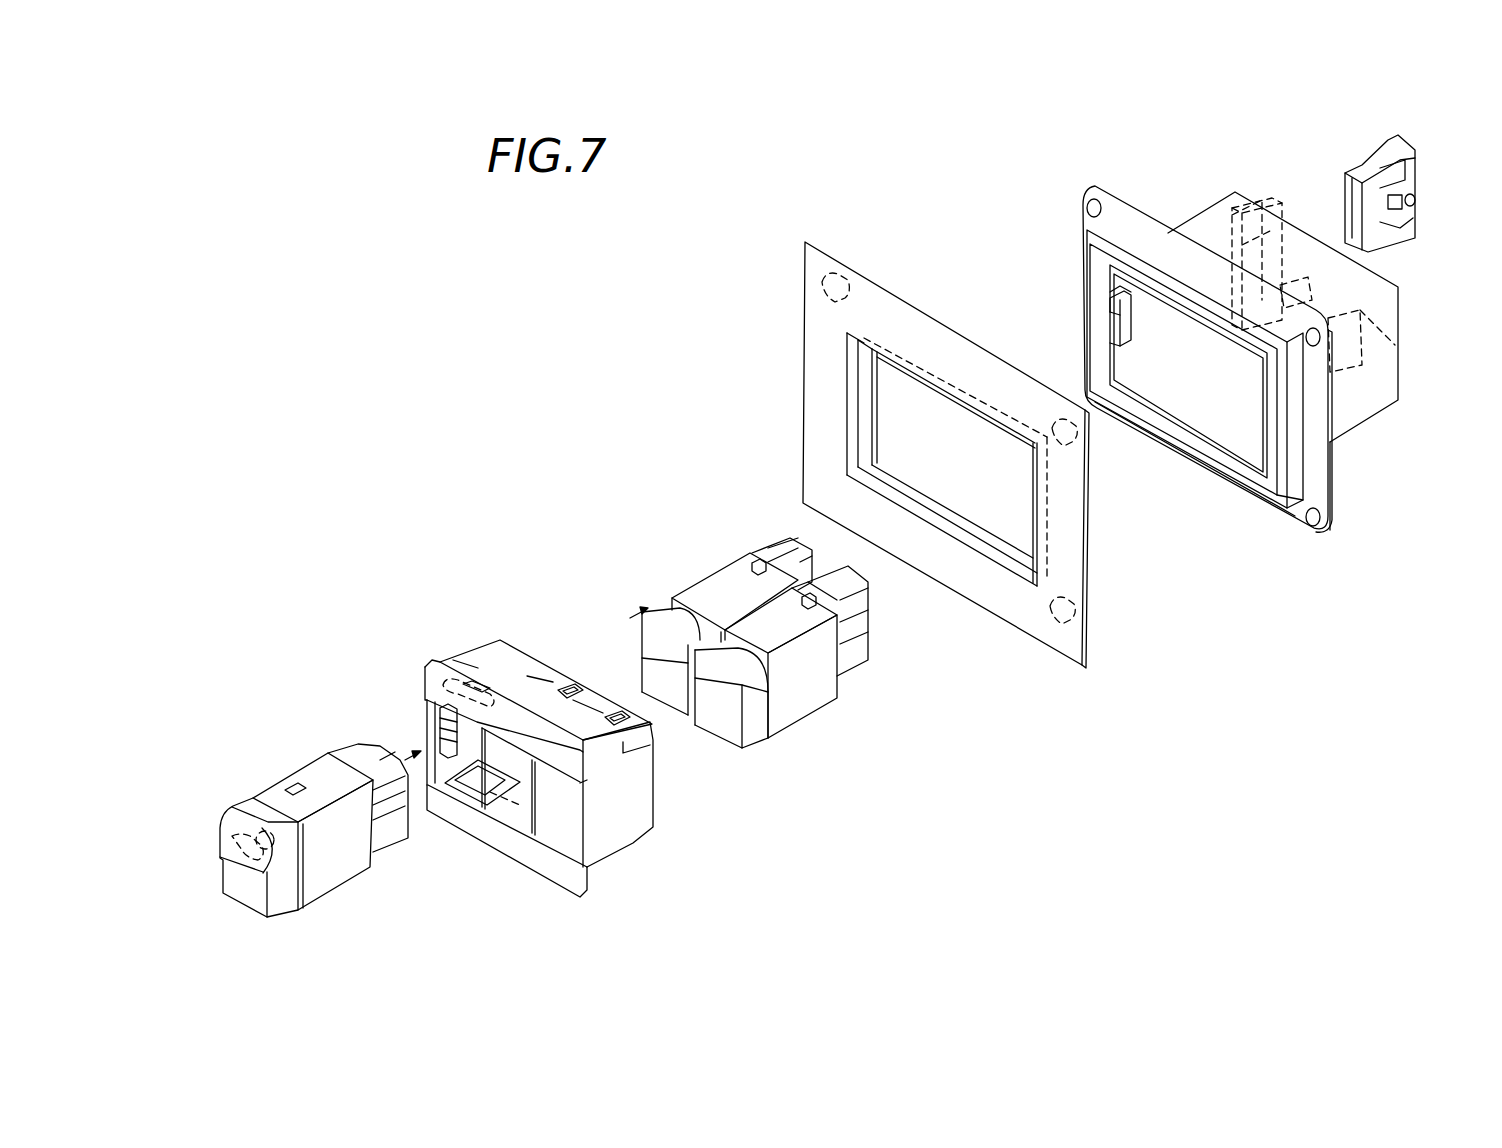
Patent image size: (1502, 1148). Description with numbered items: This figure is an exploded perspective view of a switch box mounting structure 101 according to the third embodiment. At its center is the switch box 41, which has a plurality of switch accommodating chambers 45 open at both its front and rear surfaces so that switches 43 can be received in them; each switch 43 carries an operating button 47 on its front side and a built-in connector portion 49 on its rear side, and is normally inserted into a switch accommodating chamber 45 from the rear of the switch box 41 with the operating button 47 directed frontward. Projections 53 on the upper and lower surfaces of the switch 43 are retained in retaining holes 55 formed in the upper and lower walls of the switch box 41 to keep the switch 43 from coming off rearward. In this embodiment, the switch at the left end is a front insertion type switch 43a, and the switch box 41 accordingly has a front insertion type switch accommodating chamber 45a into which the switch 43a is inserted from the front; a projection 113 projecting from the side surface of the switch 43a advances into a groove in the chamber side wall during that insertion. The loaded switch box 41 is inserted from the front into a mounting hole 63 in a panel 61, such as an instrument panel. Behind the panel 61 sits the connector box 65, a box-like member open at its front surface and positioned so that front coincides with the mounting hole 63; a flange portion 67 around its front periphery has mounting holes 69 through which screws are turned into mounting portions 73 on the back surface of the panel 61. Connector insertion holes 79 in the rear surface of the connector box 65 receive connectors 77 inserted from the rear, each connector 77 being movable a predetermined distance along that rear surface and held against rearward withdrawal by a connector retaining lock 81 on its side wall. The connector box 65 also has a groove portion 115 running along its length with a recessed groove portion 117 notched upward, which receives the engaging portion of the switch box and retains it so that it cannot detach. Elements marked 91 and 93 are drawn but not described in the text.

The switch box 41 is at (438, 650).
The switch 43 is at (826, 722).
The front insertion type switch 43a is at (345, 868).
The switch accommodating chamber 45 is at (550, 840).
The front insertion type switch accommodating chamber 45a is at (460, 800).
The operating button 47 is at (735, 722).
The built-in connector portion 49 is at (865, 640).
The projection 53 is at (808, 597).
The retaining hole 55 is at (616, 715).
The panel 61 is at (795, 356).
The mounting hole 63 is at (923, 391).
The connector box 65 is at (1170, 205).
The flange portion 67 is at (1335, 490).
The mounting hole 69 is at (1311, 530).
The mounting portion 73 is at (1090, 608).
The connector 77 is at (1350, 158).
The connector insertion hole 79 is at (1280, 212).
The connector retaining lock 81 is at (1414, 203).
The projection 91 is at (290, 788).
The lock arm 93 is at (495, 770).
The switch box mounting structure 101 is at (1068, 760).
The projection 113 is at (228, 806).
The groove portion 115 is at (1112, 335).
The recessed groove portion 117 is at (1118, 292).